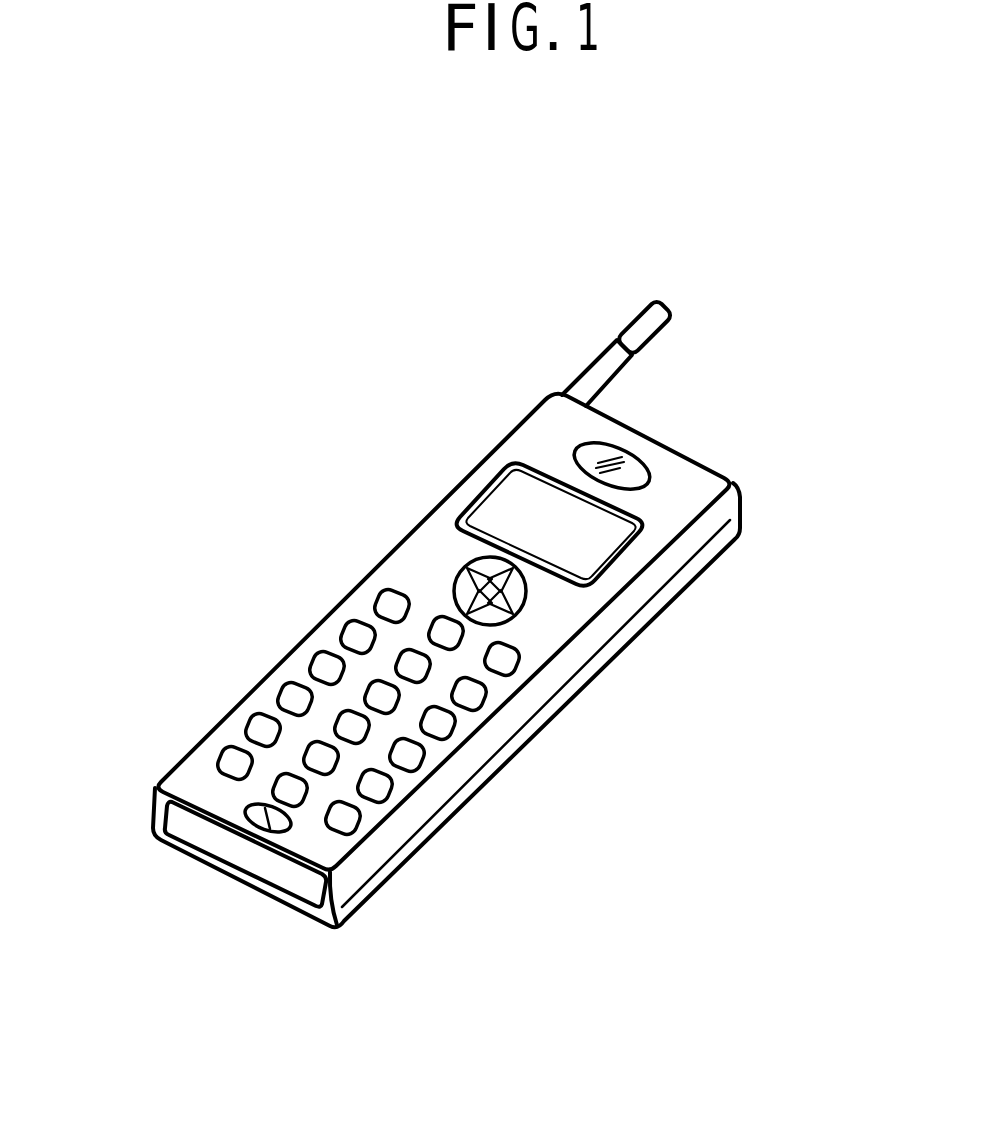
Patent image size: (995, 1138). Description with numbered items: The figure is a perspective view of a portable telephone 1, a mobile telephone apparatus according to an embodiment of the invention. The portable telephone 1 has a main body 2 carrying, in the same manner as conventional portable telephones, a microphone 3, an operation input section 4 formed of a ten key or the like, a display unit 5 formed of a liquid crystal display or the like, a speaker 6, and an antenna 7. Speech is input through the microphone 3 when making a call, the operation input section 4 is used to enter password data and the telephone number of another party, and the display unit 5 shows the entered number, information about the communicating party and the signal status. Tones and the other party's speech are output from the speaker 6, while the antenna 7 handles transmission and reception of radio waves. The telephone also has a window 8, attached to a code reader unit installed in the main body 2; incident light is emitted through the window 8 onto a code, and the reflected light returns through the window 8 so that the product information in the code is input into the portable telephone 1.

The portable telephone 1 is at (848, 256).
The main body 2 is at (528, 772).
The microphone 3 is at (248, 805).
The operation input section 4 is at (378, 551).
The display unit 5 is at (528, 508).
The speaker 6 is at (637, 477).
The antenna 7 is at (602, 368).
The window 8 is at (235, 852).